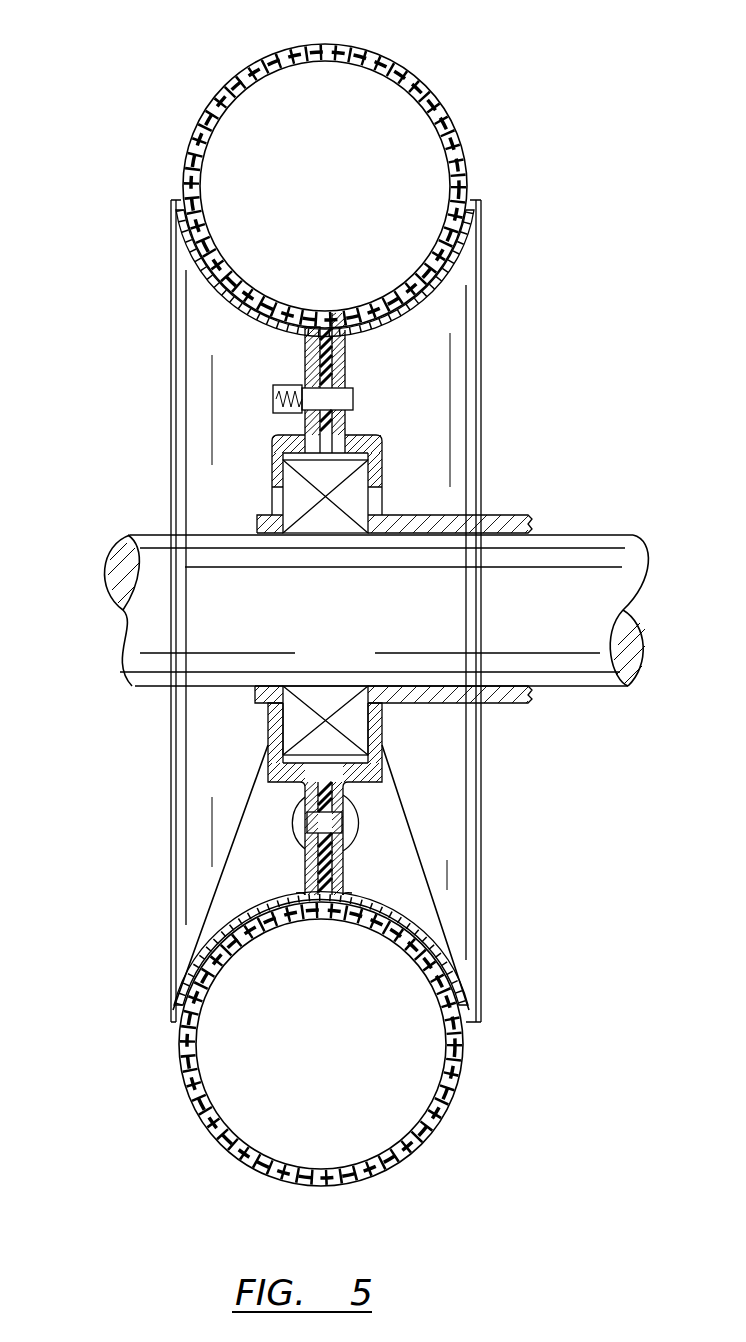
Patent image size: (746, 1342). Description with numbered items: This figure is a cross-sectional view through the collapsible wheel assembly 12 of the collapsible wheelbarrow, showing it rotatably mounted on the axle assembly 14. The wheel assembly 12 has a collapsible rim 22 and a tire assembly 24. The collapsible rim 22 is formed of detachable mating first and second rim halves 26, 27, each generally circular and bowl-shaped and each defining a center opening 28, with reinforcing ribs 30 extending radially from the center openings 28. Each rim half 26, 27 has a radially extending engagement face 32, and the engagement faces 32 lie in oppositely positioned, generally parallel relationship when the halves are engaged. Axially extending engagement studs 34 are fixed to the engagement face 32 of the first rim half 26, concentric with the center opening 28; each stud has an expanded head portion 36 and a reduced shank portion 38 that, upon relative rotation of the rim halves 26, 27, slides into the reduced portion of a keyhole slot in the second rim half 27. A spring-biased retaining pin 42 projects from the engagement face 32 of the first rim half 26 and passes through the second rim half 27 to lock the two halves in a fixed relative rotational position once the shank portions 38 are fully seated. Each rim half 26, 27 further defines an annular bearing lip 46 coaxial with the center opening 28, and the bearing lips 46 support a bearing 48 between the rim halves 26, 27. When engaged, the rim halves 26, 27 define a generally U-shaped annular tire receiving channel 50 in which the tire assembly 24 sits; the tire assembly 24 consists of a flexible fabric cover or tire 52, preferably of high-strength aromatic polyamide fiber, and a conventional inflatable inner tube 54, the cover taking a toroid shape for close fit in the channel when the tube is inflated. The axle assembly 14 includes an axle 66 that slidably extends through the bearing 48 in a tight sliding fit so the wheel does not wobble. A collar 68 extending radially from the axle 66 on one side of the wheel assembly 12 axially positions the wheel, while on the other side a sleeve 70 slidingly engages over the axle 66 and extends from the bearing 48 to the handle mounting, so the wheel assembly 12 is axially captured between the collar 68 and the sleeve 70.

The wheel assembly 12 is at (353, 611).
The axle assembly 14 is at (372, 610).
The collapsible rim 22 is at (345, 353).
The tire assembly 24 is at (352, 164).
The first rim half 26 is at (197, 272).
The second rim half 27 is at (446, 283).
The center opening 28 is at (270, 723).
The reinforcing ribs 30 is at (218, 895).
The engagement face 32 is at (318, 340).
The engagement studs 34 is at (354, 838).
The head portion 36 is at (356, 818).
The shank portion 38 is at (323, 823).
The retaining pin 42 is at (355, 398).
The annular bearing lip 46 is at (328, 746).
The bearing 48 is at (322, 693).
The tire receiving channel 50 is at (410, 288).
The tire 52 is at (440, 96).
The inner tube 54 is at (383, 70).
The axle 66 is at (627, 590).
The collar 68 is at (260, 517).
The sleeve 70 is at (513, 515).